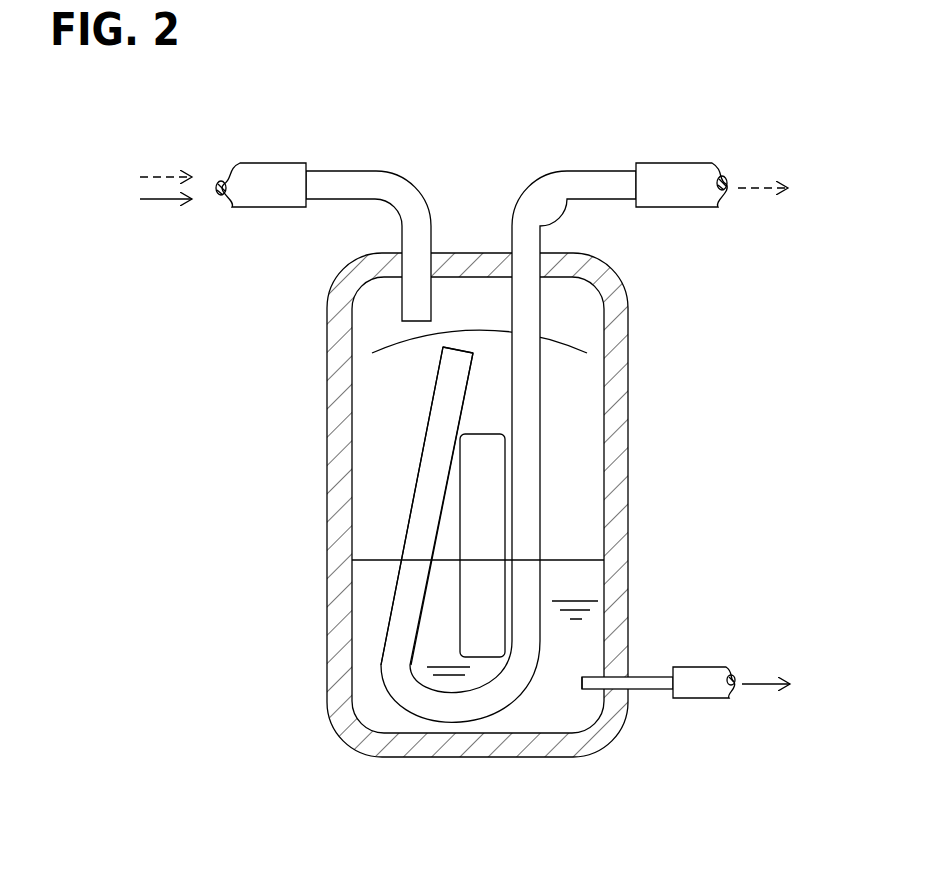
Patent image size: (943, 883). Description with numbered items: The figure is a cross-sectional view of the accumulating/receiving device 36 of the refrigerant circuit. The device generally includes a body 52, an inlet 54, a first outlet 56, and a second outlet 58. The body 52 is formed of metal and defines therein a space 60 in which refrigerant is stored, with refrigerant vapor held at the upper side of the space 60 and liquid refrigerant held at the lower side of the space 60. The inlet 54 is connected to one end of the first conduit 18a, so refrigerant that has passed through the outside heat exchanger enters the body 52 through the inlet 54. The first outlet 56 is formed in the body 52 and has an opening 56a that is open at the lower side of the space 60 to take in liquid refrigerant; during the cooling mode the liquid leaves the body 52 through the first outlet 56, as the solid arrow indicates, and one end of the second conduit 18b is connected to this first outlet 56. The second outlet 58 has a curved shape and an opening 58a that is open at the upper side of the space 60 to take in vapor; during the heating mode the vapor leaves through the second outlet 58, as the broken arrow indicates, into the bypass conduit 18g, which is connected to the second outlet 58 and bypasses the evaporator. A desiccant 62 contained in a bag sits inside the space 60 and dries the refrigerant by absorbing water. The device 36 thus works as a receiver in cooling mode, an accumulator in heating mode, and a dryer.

The accumulating/receiving device 36 is at (300, 408).
The body 52 is at (628, 468).
The inlet 54 is at (360, 171).
The first outlet 56 is at (658, 676).
The opening 56a is at (582, 682).
The second outlet 58 is at (597, 171).
The opening 58a is at (462, 347).
The space 60 is at (573, 392).
The desiccant 62 is at (483, 642).
The first conduit 18a is at (265, 210).
The second conduit 18b is at (708, 668).
The bypass conduit 18g is at (690, 200).